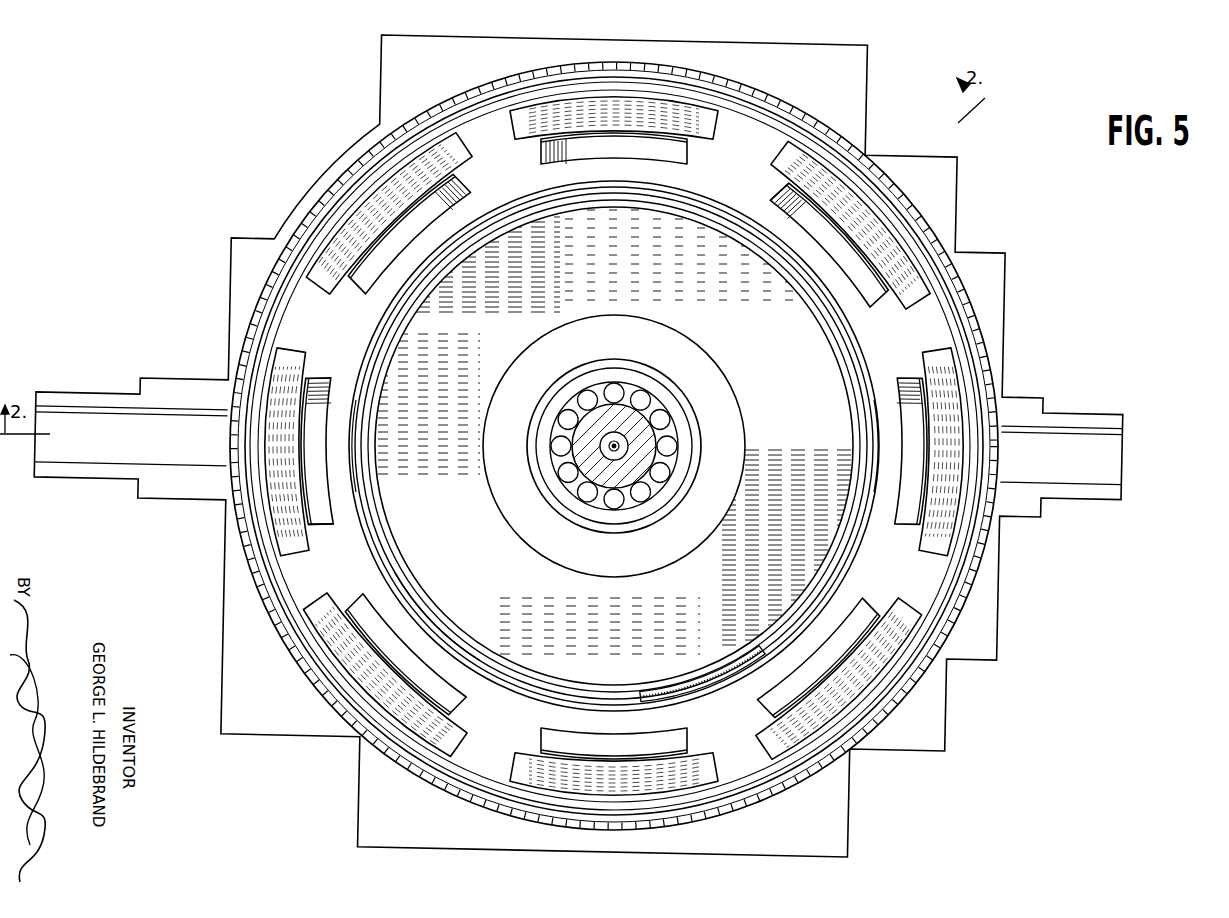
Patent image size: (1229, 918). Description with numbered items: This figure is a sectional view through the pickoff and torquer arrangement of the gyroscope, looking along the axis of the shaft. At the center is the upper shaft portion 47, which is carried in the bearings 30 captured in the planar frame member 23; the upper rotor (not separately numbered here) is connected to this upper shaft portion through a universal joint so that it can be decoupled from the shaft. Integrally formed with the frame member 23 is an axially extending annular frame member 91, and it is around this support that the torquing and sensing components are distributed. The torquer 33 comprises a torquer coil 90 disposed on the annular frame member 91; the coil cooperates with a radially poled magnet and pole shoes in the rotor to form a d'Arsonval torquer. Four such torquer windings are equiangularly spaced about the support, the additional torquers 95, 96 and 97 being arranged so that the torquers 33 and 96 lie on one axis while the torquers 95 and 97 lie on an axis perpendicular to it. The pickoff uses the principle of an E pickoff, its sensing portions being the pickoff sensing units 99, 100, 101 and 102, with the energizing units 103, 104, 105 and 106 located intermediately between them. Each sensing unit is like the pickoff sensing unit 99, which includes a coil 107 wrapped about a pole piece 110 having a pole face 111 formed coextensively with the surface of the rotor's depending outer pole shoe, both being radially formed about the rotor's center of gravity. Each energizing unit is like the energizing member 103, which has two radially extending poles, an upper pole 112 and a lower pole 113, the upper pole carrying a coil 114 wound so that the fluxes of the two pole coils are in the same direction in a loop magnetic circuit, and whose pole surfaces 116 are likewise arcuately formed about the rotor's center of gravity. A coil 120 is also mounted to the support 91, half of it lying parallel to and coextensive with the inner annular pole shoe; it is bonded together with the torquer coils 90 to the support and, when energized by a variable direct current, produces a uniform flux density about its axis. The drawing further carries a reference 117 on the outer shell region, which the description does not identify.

The planar frame member 23 is at (978, 636).
The bearings 30 is at (628, 452).
The torquer 33 is at (606, 440).
The upper shaft portion 47 is at (646, 444).
The torquer coil 90 is at (778, 244).
The axially extending annular frame member 91 is at (725, 228).
The torquer 95 is at (875, 470).
The torquer 96 is at (657, 700).
The torquer 97 is at (364, 357).
The pickoff sensing unit 99 is at (296, 414).
The pickoff sensing unit 100 is at (574, 142).
The pickoff sensing unit 101 is at (920, 530).
The pickoff sensing unit 102 is at (612, 762).
The energizing unit 103 is at (834, 234).
The energizing unit 104 is at (783, 715).
The energizing unit 105 is at (432, 712).
The energizing unit 106 is at (445, 184).
The coil 107 is at (313, 462).
The pole piece 110 is at (297, 462).
The pole face 111 is at (318, 506).
The upper pole 112 is at (782, 185).
The lower pole 113 is at (800, 213).
The coil 114 is at (788, 161).
The pole surfaces 116 is at (840, 272).
The outer shell 117 is at (805, 133).
The coil 120 is at (426, 626).